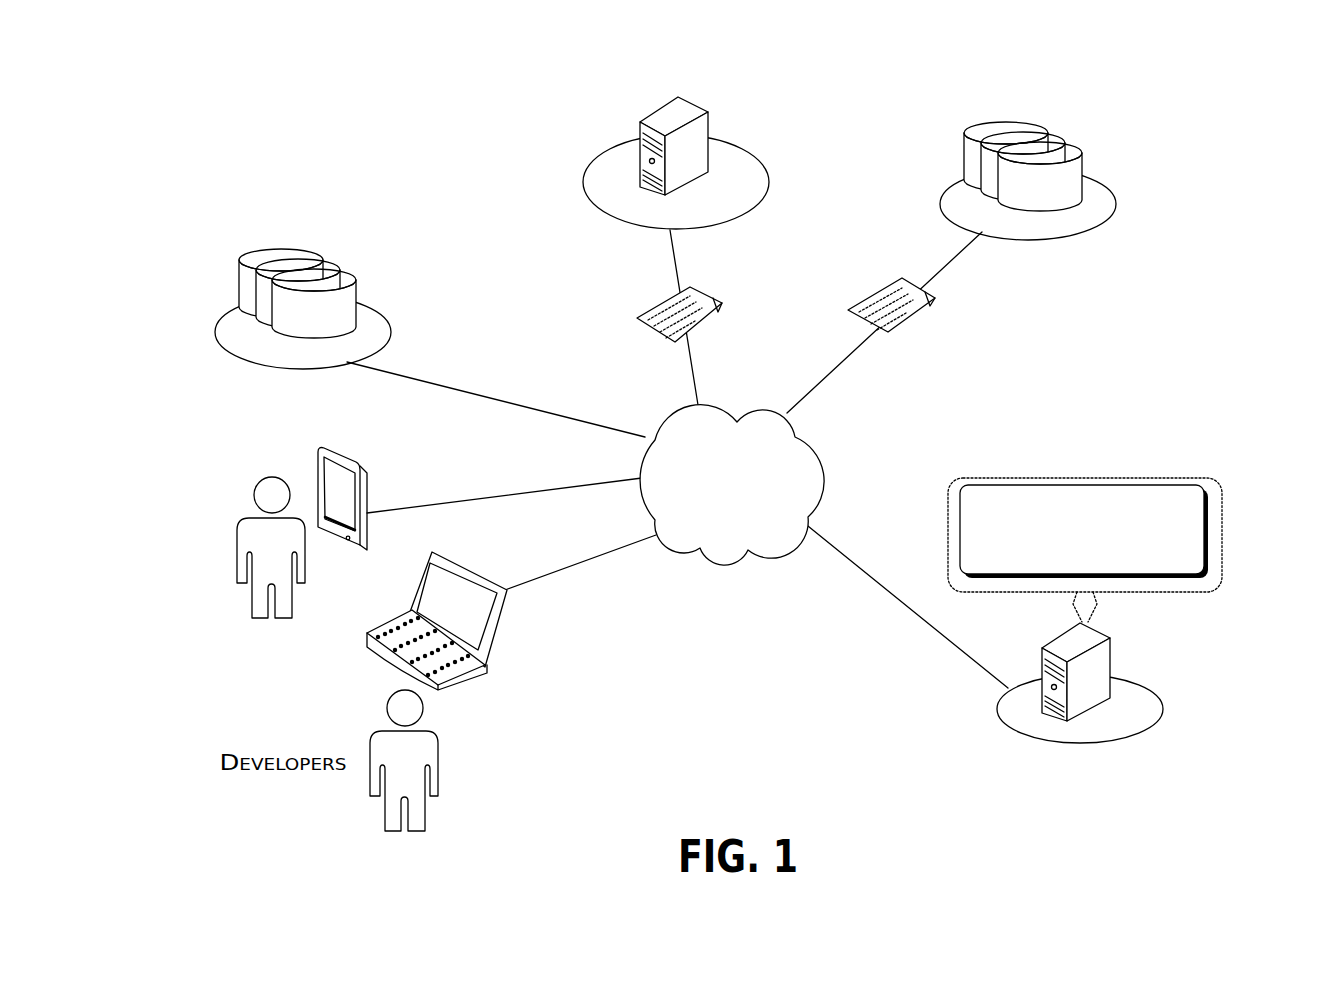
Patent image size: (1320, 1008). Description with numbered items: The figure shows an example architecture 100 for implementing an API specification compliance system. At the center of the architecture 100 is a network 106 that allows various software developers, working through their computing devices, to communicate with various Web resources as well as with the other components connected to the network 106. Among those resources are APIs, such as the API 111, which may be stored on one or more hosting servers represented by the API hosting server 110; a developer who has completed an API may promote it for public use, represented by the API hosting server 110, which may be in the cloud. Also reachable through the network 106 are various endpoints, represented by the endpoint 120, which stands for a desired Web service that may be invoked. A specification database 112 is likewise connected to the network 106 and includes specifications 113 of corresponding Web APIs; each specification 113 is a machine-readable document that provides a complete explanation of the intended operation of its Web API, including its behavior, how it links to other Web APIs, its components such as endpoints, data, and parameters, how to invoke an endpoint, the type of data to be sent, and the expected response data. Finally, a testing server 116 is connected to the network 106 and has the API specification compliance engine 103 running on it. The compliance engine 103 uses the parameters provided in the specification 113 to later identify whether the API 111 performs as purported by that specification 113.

The architecture 100 is at (210, 58).
The API specification compliance engine 103 is at (1097, 568).
The network 106 is at (650, 470).
The API hosting server 110 is at (770, 172).
The API 111 is at (663, 304).
The specification database 112 is at (1102, 177).
The specification 113 is at (908, 321).
The testing server 116 is at (1152, 689).
The endpoint 120 is at (377, 303).